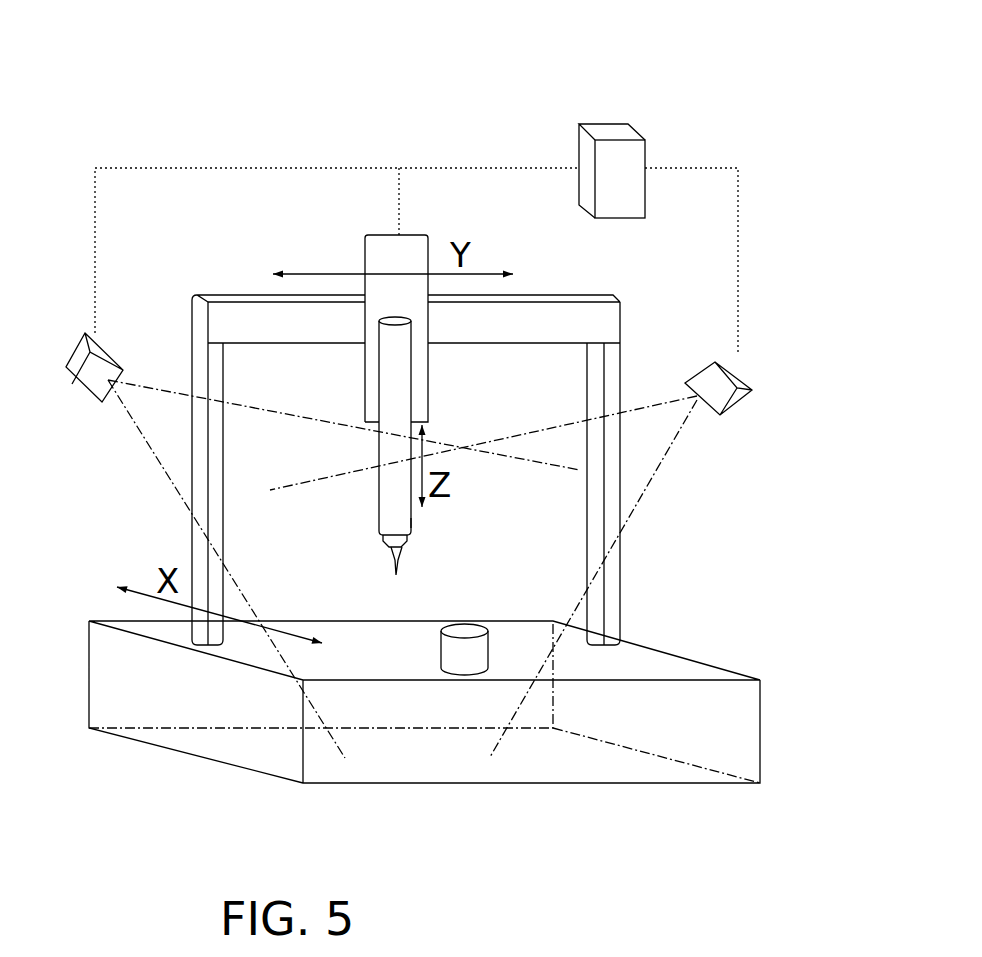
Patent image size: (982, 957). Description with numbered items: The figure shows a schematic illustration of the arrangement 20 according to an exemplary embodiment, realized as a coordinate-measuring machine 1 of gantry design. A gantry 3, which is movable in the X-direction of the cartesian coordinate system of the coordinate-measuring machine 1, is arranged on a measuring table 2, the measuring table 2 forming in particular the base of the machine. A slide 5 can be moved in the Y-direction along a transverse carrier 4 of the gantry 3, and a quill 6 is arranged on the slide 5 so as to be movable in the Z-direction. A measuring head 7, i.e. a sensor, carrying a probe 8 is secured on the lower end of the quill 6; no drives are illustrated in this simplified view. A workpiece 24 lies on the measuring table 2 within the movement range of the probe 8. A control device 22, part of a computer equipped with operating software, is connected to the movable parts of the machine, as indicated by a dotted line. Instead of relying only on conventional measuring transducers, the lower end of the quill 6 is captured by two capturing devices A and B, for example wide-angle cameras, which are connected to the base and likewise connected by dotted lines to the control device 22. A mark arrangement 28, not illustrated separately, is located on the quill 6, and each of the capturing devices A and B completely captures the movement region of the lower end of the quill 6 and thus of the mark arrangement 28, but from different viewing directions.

The arrangement 20 is at (758, 101).
The control device 22 is at (630, 227).
The coordinate-measuring machine 1 is at (209, 262).
The transverse carrier 4 is at (190, 313).
The gantry 3 is at (620, 370).
The slide 5 is at (363, 375).
The quill 6 is at (379, 510).
The measuring head 7 is at (385, 542).
The probe 8 is at (393, 563).
The mark arrangement 28 is at (429, 520).
The measuring table 2 is at (397, 685).
The workpiece 24 is at (437, 647).
The capturing device A is at (83, 396).
The capturing device B is at (738, 403).